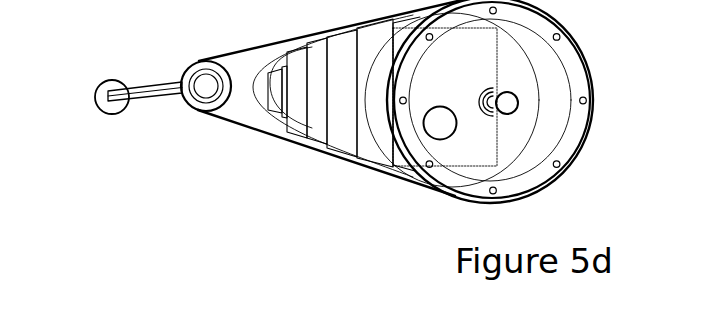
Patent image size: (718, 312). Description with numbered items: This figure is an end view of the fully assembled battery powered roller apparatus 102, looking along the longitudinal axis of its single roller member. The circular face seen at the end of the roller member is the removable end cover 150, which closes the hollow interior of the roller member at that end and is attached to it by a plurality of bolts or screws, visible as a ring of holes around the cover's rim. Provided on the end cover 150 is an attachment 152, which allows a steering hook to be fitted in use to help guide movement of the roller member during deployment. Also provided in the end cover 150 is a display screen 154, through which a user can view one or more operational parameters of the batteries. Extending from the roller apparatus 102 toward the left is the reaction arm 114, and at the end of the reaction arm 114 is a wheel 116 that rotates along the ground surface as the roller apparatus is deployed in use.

The roller apparatus 102 is at (284, 142).
The reaction arm 114 is at (162, 95).
The wheel 116 is at (100, 100).
The end cover 150 is at (563, 90).
The attachment 152 is at (510, 102).
The display screen 154 is at (440, 123).